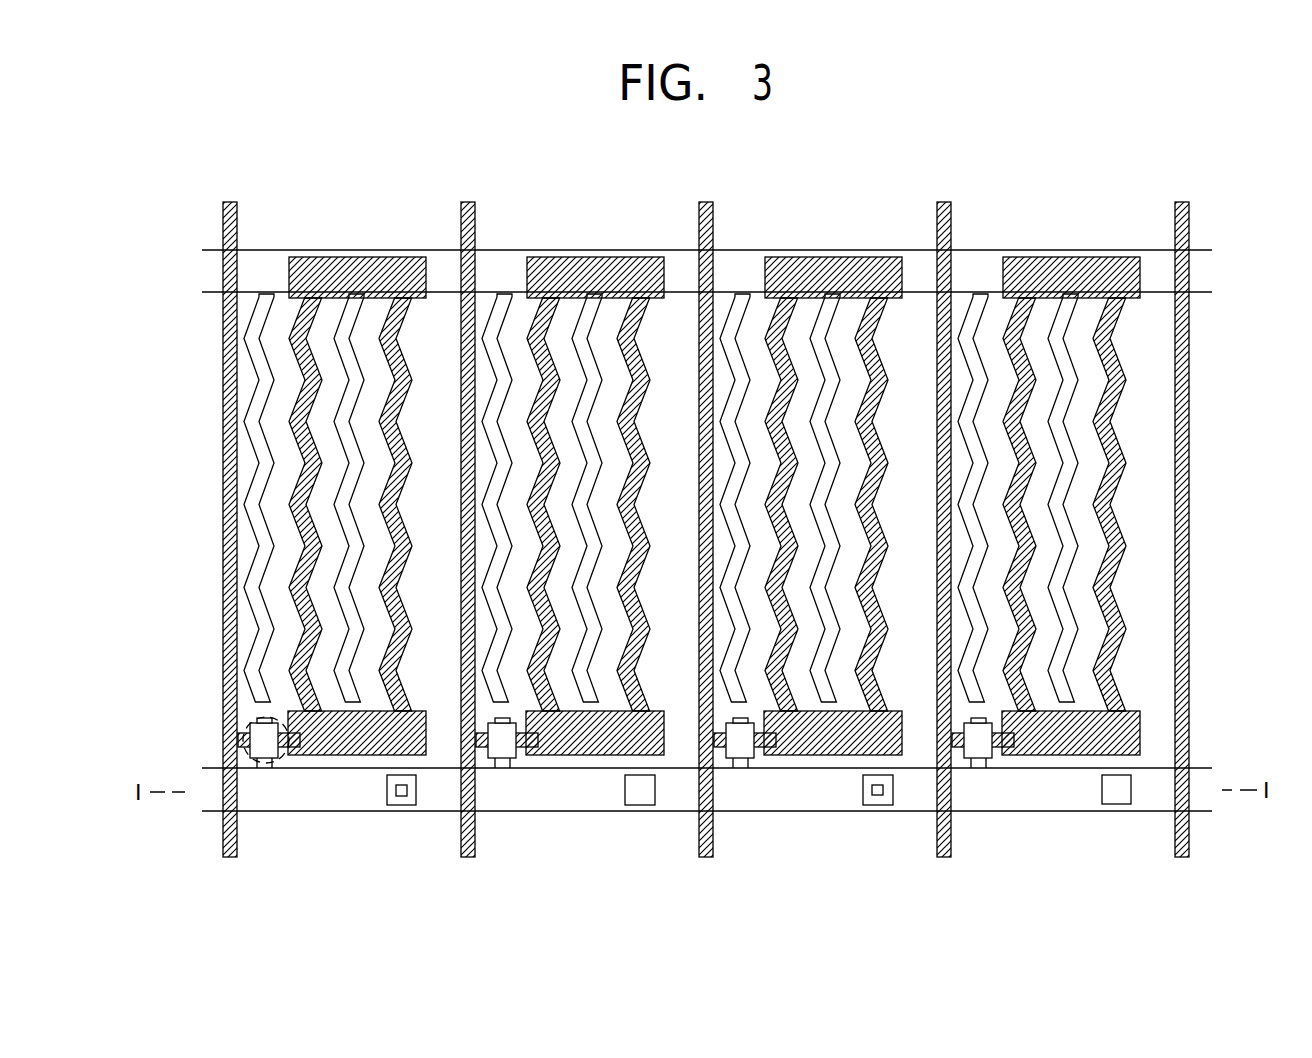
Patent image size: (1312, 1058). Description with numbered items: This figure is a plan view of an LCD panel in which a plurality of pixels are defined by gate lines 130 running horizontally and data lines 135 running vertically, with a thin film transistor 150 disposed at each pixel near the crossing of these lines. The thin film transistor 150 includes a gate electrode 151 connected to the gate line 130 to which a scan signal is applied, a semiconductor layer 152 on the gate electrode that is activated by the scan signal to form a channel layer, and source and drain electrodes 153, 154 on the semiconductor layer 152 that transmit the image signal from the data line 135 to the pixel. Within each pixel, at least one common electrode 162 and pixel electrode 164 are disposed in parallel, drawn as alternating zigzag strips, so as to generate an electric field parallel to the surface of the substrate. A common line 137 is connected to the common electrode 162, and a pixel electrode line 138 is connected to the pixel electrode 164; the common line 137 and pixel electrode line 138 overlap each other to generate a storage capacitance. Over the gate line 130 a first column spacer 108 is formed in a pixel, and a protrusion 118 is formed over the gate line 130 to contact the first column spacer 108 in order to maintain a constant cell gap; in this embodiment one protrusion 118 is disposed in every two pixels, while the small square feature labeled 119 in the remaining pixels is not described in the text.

The first column spacer 108 is at (396, 797).
The protrusion 118 is at (407, 797).
The pad 119 is at (640, 806).
The gate line 130 is at (341, 803).
The data line 135 is at (228, 505).
The common line 137 is at (435, 255).
The pixel electrode line 138 is at (363, 267).
The thin film transistor 150 is at (236, 768).
The gate electrode 151 is at (264, 766).
The semiconductor layer 152 is at (255, 721).
The source electrode 153 is at (238, 742).
The drain electrode 154 is at (283, 757).
The common electrode 162 is at (352, 367).
The pixel electrode 164 is at (295, 435).